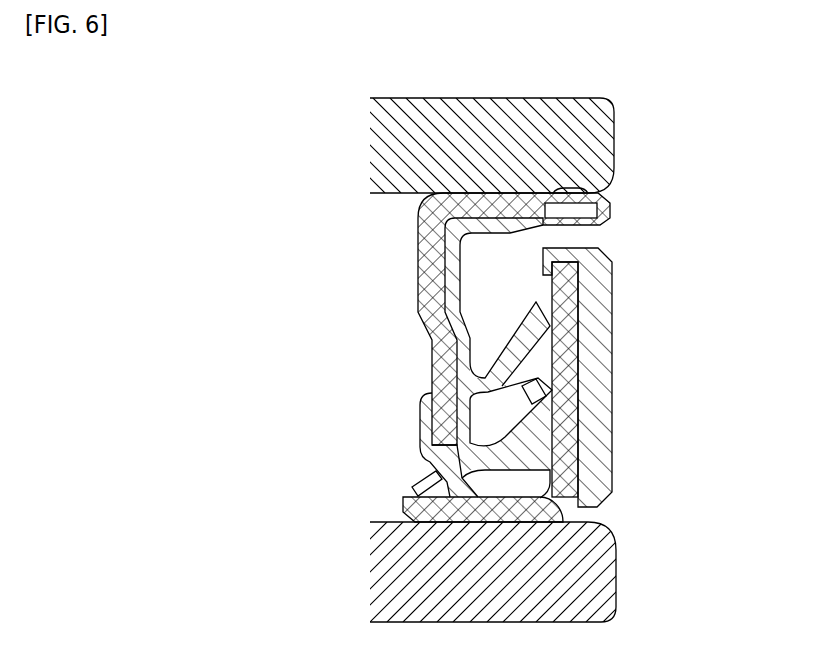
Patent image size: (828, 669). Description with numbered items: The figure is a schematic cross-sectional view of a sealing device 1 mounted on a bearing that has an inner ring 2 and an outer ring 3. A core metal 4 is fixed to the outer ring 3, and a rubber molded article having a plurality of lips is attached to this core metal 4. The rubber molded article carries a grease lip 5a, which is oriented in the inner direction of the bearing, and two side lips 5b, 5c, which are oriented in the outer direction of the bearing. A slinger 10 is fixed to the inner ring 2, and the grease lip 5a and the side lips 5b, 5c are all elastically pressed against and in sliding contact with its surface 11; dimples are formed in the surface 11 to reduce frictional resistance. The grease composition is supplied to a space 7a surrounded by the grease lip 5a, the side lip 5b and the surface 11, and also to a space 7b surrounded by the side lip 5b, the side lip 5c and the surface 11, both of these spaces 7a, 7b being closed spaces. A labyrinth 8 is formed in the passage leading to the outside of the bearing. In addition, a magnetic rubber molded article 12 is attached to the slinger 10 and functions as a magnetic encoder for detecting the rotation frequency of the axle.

The sealing device 1 is at (393, 334).
The inner ring 2 is at (577, 575).
The outer ring 3 is at (568, 147).
The core metal 4 is at (418, 233).
The grease lip 5a is at (438, 480).
The side lip 5b is at (482, 368).
The side lip 5c is at (537, 313).
The space 7a is at (528, 480).
The space 7b is at (495, 422).
The labyrinth 8 is at (568, 237).
The slinger 10 is at (568, 295).
The surface 11 is at (442, 467).
The magnetic rubber molded article 12 is at (490, 395).